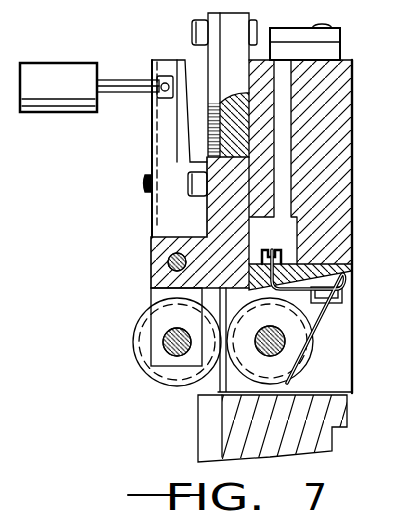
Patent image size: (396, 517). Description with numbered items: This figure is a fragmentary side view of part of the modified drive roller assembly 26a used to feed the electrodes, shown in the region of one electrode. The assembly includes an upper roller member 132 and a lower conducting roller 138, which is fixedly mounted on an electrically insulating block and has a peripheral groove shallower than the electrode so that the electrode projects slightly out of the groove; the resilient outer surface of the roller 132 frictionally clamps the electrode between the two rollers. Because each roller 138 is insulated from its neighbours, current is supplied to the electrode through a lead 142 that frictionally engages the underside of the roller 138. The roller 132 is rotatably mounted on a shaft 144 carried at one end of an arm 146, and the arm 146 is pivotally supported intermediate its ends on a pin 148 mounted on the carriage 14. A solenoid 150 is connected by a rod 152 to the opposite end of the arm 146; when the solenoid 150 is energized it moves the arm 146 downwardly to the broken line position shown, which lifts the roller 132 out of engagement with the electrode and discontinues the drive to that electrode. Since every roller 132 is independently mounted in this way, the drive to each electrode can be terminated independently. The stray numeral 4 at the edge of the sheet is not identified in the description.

The carriage 14 is at (352, 100).
The drive roller assembly 26a is at (184, 394).
The upper roller member 132 is at (131, 324).
The roller 138 is at (285, 395).
The lead 142 is at (330, 330).
The shaft 144 is at (166, 331).
The arm 146 is at (155, 122).
The pin 148 is at (168, 258).
The solenoid 150 is at (70, 93).
The rod 152 is at (120, 94).
The edge numeral 4 is at (10, 229).